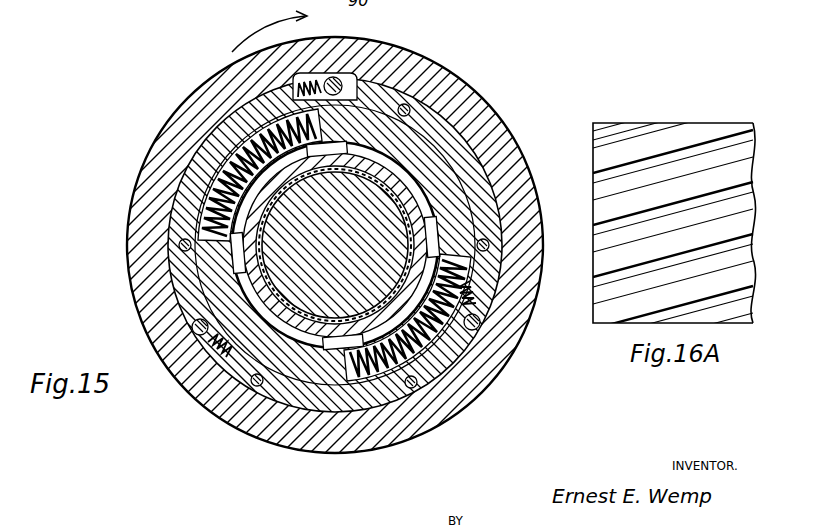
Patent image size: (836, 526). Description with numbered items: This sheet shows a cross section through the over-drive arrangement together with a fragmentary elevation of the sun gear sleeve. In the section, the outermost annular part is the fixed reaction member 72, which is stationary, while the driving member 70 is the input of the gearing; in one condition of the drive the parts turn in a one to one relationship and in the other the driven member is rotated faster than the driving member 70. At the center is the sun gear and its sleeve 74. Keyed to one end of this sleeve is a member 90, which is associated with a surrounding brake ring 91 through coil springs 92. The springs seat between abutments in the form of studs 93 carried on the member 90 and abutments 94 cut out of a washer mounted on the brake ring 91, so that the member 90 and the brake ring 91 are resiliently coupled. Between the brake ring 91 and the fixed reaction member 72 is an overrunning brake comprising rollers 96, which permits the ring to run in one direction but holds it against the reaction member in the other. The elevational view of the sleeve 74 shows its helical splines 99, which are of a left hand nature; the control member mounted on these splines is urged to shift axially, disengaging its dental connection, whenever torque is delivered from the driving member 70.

In FIG. 15, the driving member 70 is at (215, 412).
In FIG. 15, the fixed reaction member 72 is at (178, 112).
In FIG. 15, the sun gear and sleeve 74 is at (283, 400).
In FIG. 16A, the sun gear and sleeve 74 is at (625, 122).
In FIG. 15, the member 90 is at (372, 375).
In FIG. 15, the brake ring 91 is at (172, 218).
In FIG. 15, the coil springs 92 is at (233, 112).
In FIG. 15, the studs 93 is at (338, 105).
In FIG. 15, the abutments 94 is at (188, 289).
In FIG. 15, the rollers 96 is at (334, 80).
In FIG. 16A, the helical splines 99 is at (700, 148).